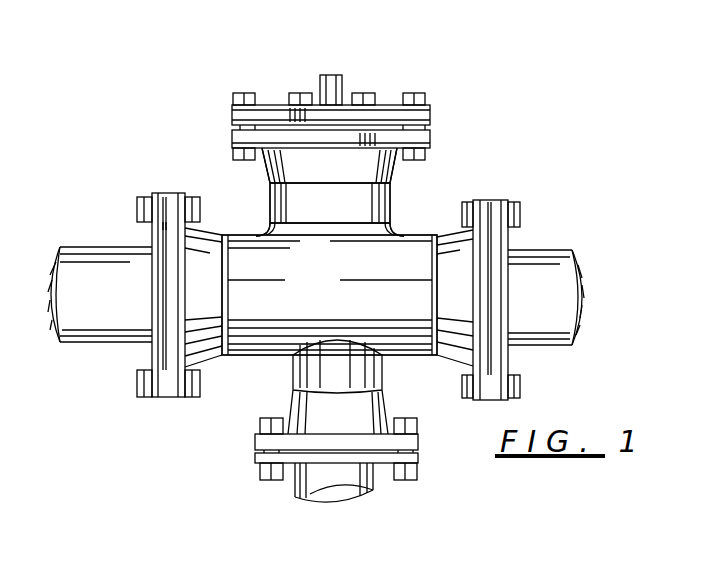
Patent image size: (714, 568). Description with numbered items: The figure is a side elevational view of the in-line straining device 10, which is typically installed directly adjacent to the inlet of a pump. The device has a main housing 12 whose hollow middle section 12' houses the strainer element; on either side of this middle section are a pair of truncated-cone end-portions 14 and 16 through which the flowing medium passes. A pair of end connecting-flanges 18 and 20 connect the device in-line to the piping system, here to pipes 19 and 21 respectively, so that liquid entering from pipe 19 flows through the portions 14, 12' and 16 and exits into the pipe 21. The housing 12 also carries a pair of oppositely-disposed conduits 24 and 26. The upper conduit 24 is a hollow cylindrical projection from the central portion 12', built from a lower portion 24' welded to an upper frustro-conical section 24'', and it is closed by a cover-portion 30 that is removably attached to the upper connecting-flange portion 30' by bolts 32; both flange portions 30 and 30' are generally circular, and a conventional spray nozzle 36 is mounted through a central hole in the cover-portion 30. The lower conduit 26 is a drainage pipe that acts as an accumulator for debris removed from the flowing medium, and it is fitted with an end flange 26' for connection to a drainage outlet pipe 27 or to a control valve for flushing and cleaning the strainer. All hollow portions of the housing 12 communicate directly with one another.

The in-line straining device 10 is at (478, 146).
The main housing 12 is at (334, 275).
The middle section of the main housing 12' is at (329, 295).
The truncated-cone end-portion 14 is at (212, 302).
The truncated-cone end-portion 16 is at (463, 304).
The end connecting-flange 18 is at (179, 200).
The pipe 19 is at (104, 334).
The end connecting-flange 20 is at (483, 201).
The pipe 21 is at (560, 346).
The upper conduit 24 is at (355, 192).
The lower portion of conduit 24' is at (330, 209).
The upper frustro-conical section of conduit 24'' is at (329, 165).
The drainage conduit 26 is at (305, 387).
The end flange 26' is at (358, 449).
The pipe 27 is at (348, 486).
The cover-portion 30 is at (331, 104).
The upper connecting-flange portion 30' is at (355, 133).
The bolts 32 is at (256, 82).
The spray nozzle 36 is at (352, 66).